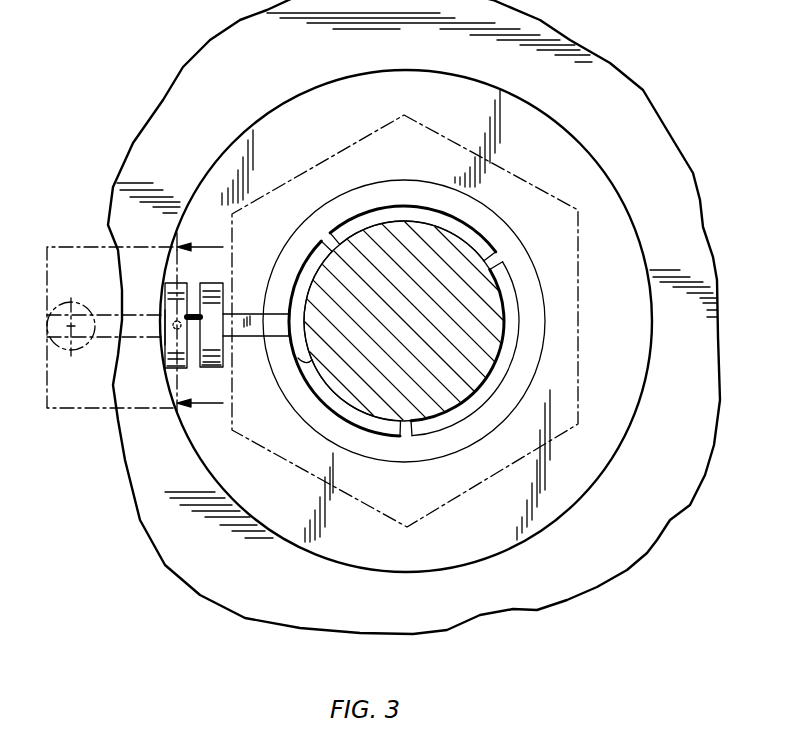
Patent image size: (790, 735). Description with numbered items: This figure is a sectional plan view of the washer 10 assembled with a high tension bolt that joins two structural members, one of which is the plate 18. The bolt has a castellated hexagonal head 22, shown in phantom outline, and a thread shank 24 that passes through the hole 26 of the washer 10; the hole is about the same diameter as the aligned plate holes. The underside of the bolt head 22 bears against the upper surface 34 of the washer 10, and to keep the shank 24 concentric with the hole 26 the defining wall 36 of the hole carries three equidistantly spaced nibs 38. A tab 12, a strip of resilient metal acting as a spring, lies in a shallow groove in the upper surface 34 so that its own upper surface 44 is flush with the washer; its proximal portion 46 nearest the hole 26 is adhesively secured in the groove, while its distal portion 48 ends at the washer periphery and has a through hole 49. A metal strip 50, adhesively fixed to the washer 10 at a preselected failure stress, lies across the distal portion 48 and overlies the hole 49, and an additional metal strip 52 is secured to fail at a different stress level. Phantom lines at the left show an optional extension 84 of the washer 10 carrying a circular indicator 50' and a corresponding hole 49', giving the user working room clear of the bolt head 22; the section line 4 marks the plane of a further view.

The washer 10 is at (383, 317).
The tab 12 is at (195, 313).
The plate 18 is at (637, 103).
The bolt head 22 is at (423, 127).
The thread shank 24 is at (495, 323).
The hole 26 is at (450, 222).
The upper surface 34 is at (279, 496).
The defining wall 36 is at (300, 390).
The nibs 38 is at (493, 260).
The upper surface 44 is at (242, 337).
The proximal portion 46 is at (287, 313).
The distal portion 48 is at (163, 317).
The through hole 49 is at (155, 347).
The metal strip 50 is at (159, 387).
The metal strip 52 is at (218, 368).
The extension 84 is at (74, 413).
The phantom pin hole 49' is at (106, 342).
The indicator 50' is at (84, 293).
The section line 4- 4 is at (200, 327).